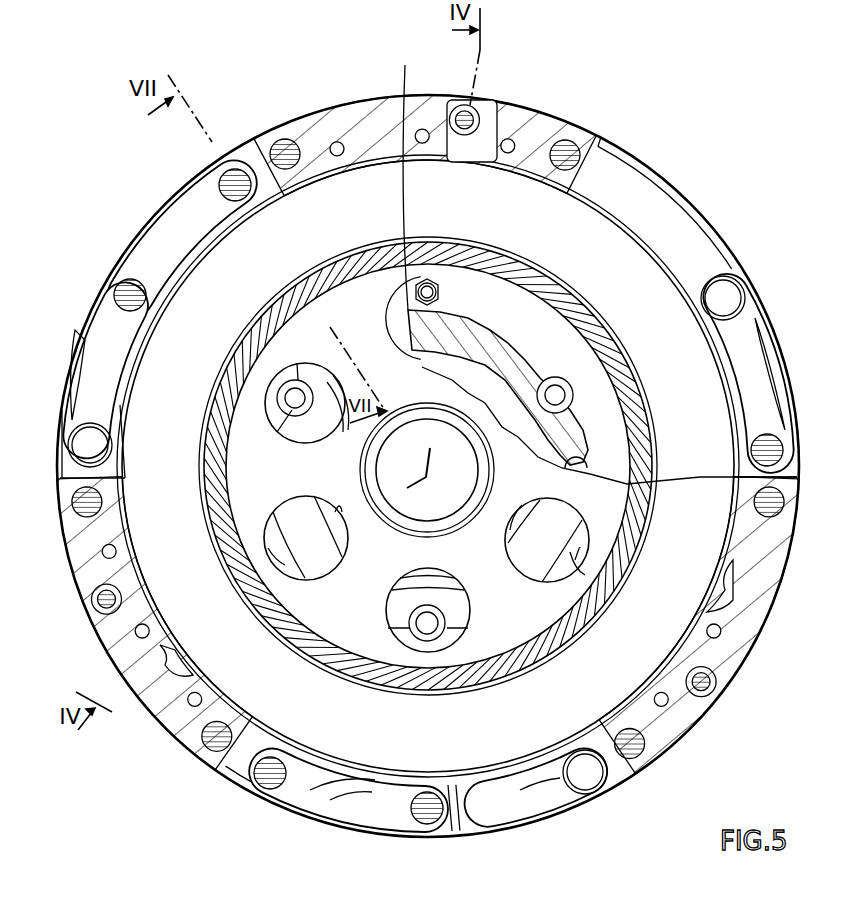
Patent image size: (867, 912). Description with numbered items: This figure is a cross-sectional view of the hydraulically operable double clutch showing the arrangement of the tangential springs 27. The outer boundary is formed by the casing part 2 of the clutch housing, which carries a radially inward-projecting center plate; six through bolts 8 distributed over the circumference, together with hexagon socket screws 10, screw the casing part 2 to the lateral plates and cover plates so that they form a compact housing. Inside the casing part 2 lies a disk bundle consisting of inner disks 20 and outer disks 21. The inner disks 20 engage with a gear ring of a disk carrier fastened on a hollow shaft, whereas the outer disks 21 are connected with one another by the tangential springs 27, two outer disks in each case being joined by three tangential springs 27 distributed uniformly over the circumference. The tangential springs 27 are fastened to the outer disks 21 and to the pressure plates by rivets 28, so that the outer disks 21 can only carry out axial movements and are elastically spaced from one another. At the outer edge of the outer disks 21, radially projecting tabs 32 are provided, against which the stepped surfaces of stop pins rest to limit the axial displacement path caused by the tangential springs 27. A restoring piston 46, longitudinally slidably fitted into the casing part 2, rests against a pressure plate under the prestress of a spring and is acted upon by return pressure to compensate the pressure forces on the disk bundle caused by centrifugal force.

The casing part 2 is at (358, 108).
The through bolts 8 is at (277, 140).
The hexagon socket screws 10 is at (292, 380).
The inner disks 20 is at (606, 664).
The outer disks 21 is at (462, 805).
The tangential springs 27 is at (213, 207).
The rivets 28 is at (722, 298).
The tabs 32 is at (758, 667).
The restoring piston 46 is at (478, 112).